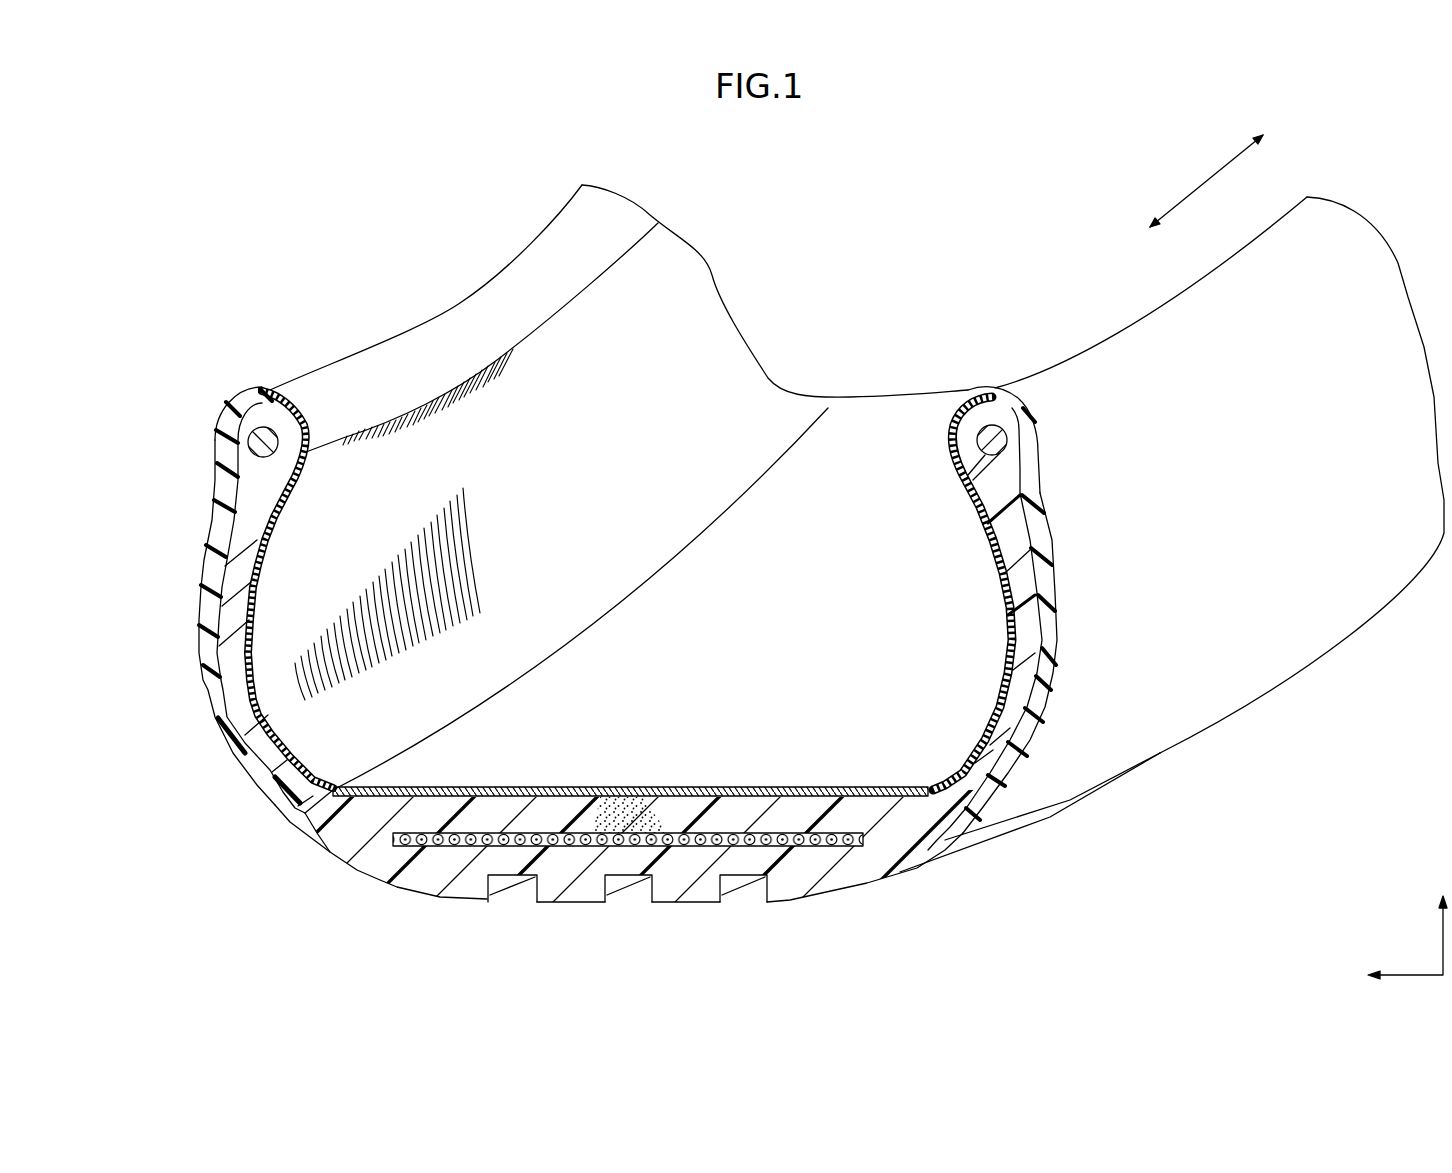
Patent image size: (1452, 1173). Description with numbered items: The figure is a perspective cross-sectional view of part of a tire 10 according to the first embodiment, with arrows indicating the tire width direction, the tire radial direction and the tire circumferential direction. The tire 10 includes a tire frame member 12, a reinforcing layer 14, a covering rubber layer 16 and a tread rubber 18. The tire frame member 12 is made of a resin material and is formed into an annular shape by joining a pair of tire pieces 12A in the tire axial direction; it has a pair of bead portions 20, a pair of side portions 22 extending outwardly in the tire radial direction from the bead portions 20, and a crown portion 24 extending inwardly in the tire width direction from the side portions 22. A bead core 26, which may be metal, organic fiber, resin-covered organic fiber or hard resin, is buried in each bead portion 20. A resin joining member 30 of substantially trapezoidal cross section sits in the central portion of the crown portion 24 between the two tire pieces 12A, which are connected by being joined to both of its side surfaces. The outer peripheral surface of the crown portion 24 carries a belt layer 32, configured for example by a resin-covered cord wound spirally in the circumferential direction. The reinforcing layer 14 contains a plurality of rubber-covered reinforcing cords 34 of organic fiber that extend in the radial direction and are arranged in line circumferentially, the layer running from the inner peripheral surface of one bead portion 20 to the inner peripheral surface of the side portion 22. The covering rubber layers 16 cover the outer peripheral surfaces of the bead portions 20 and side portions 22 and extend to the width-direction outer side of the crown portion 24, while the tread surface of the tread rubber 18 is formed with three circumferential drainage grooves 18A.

The tire 10 is at (942, 150).
The tire frame member 12 is at (902, 808).
The tire piece 12A is at (228, 598).
The reinforcing layer 14 is at (993, 558).
The covering rubber layer 16 is at (247, 393).
The tread rubber 18 is at (414, 882).
The groove 18A is at (507, 887).
The bead portion 20 is at (247, 460).
The side portion 22 is at (240, 715).
The crown portion 24 is at (428, 795).
The bead core 26 is at (237, 436).
The joining member 30 is at (636, 800).
The belt layer 32 is at (745, 847).
The reinforcing cord 34 is at (468, 540).